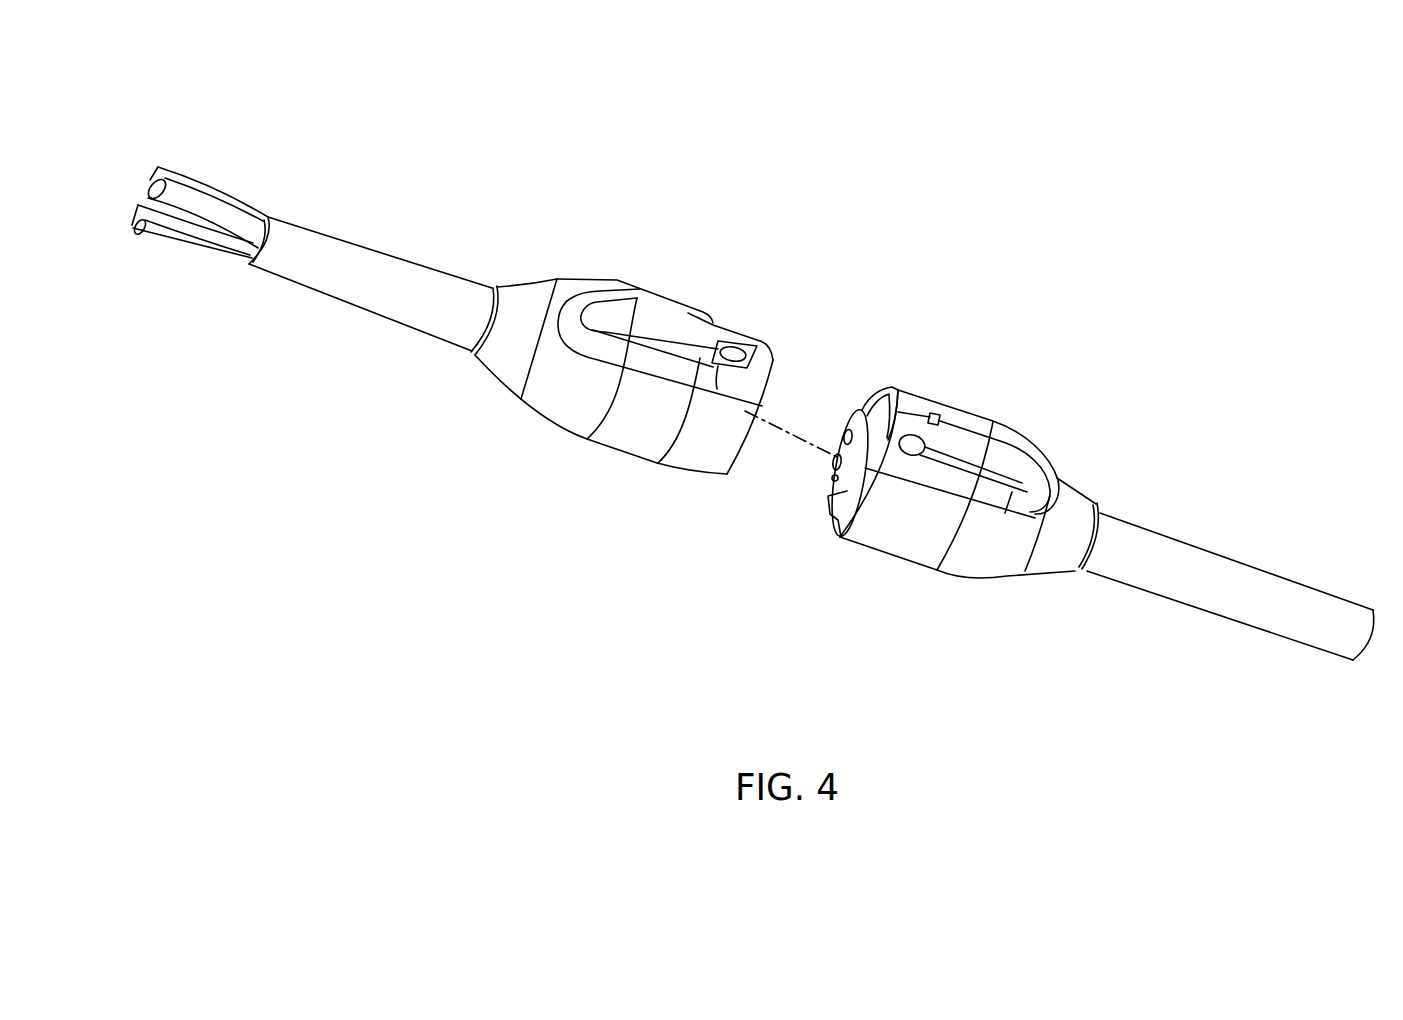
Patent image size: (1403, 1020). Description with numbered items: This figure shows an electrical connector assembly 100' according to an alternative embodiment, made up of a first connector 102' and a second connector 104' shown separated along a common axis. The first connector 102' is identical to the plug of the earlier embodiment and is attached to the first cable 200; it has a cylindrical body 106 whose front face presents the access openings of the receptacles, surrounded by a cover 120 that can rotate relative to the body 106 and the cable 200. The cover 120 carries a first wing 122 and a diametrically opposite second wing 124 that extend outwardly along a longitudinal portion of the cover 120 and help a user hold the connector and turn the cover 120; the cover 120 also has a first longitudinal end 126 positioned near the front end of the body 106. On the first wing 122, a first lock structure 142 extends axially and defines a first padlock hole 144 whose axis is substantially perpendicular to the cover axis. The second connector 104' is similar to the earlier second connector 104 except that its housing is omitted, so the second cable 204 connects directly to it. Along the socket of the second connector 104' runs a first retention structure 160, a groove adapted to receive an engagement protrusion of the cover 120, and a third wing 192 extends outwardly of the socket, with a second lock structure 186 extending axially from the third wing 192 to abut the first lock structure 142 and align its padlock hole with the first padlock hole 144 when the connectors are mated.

The electrical connector assembly 100' is at (482, 263).
The first connector 102' is at (969, 534).
The second connector 104' is at (598, 376).
The second connector 104 is at (818, 472).
The cylindrical body 106 is at (863, 412).
The cover 120 is at (967, 405).
The first wing 122 is at (1020, 457).
The second wing 124 is at (830, 513).
The first longitudinal end 126 is at (888, 392).
The first lock structure 142 is at (914, 414).
The first padlock hole 144 is at (909, 462).
The first retention structure 160 is at (755, 410).
The second lock structure 186 is at (737, 342).
The third wing 192 is at (672, 322).
The first cable 200 is at (1280, 627).
The second cable 204 is at (337, 288).